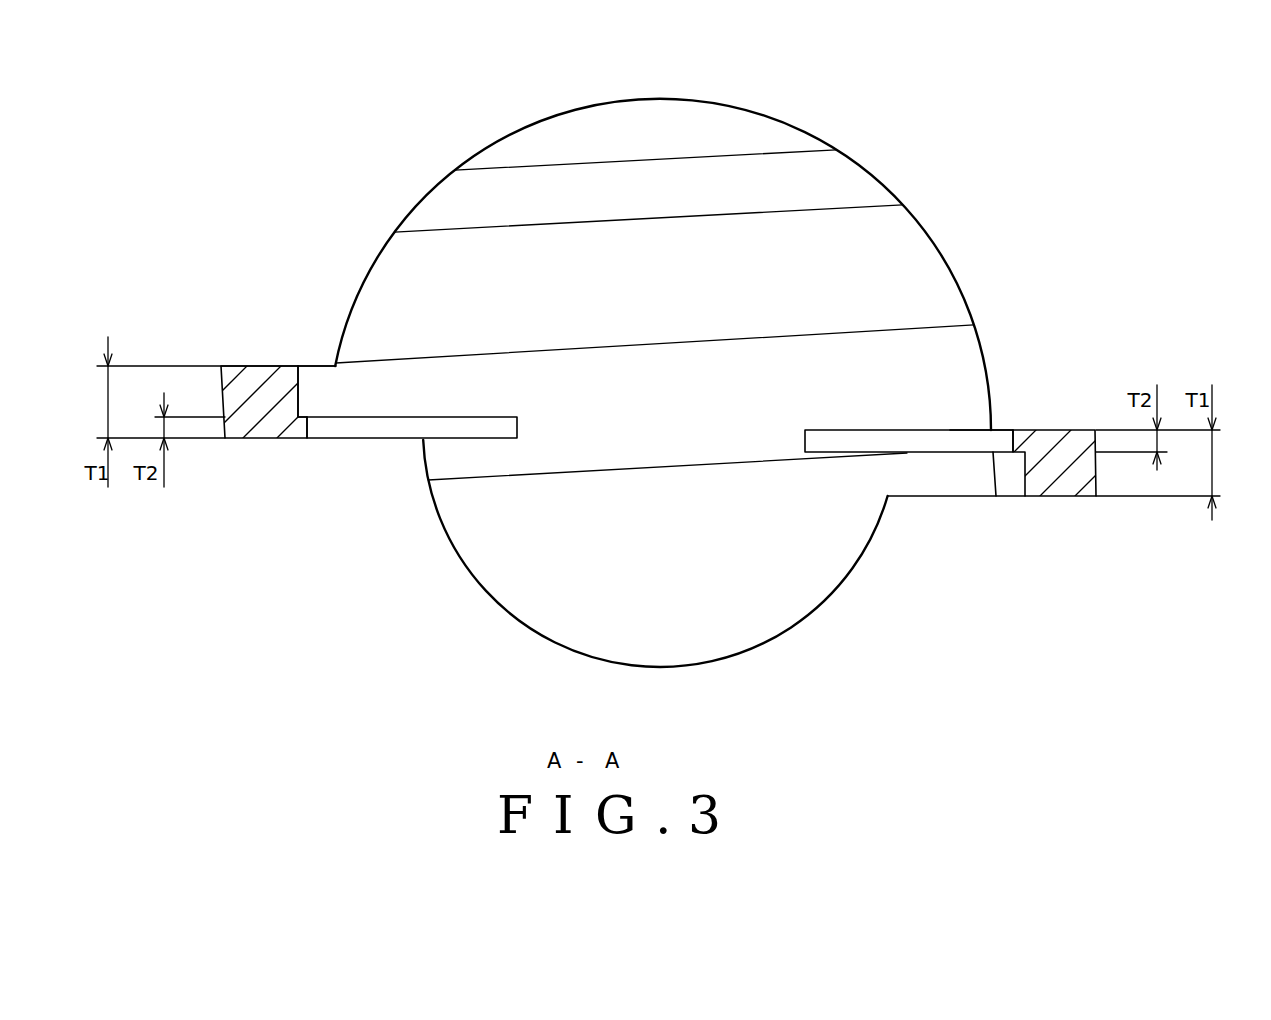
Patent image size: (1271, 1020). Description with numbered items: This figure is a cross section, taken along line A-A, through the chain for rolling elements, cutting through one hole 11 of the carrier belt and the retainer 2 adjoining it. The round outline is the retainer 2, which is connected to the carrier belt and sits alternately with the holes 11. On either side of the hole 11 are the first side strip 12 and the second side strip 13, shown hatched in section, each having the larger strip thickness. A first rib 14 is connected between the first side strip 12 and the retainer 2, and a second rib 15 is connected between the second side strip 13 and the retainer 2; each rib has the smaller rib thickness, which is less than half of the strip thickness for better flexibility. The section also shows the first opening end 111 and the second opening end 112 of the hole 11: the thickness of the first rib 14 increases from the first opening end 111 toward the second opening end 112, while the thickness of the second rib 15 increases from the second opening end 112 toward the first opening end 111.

The retainer 2 is at (557, 148).
The hole 11 is at (707, 393).
The first opening end 111 is at (315, 363).
The second opening end 112 is at (348, 440).
The first side strip 12 is at (1057, 485).
The second side strip 13 is at (247, 388).
The first rib 14 is at (905, 440).
The second rib 15 is at (380, 425).